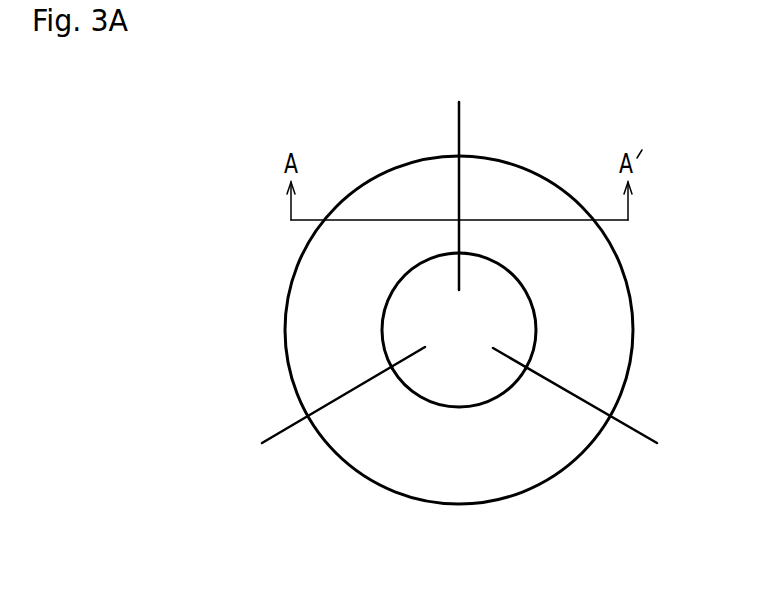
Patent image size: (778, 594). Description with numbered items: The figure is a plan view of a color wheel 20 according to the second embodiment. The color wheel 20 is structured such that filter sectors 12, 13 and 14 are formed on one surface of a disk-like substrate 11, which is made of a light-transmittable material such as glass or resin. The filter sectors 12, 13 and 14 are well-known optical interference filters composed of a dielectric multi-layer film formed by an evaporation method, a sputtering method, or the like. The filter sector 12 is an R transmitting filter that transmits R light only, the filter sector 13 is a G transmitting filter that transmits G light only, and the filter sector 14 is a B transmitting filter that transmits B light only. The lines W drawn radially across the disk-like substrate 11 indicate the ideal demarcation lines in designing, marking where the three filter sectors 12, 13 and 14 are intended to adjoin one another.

The disk-like substrate 11 is at (635, 333).
The filter sector 12 is at (613, 292).
The filter sector 13 is at (540, 463).
The filter sector 14 is at (307, 302).
The color wheel 20 is at (461, 330).
The demarcation line W is at (459, 128).